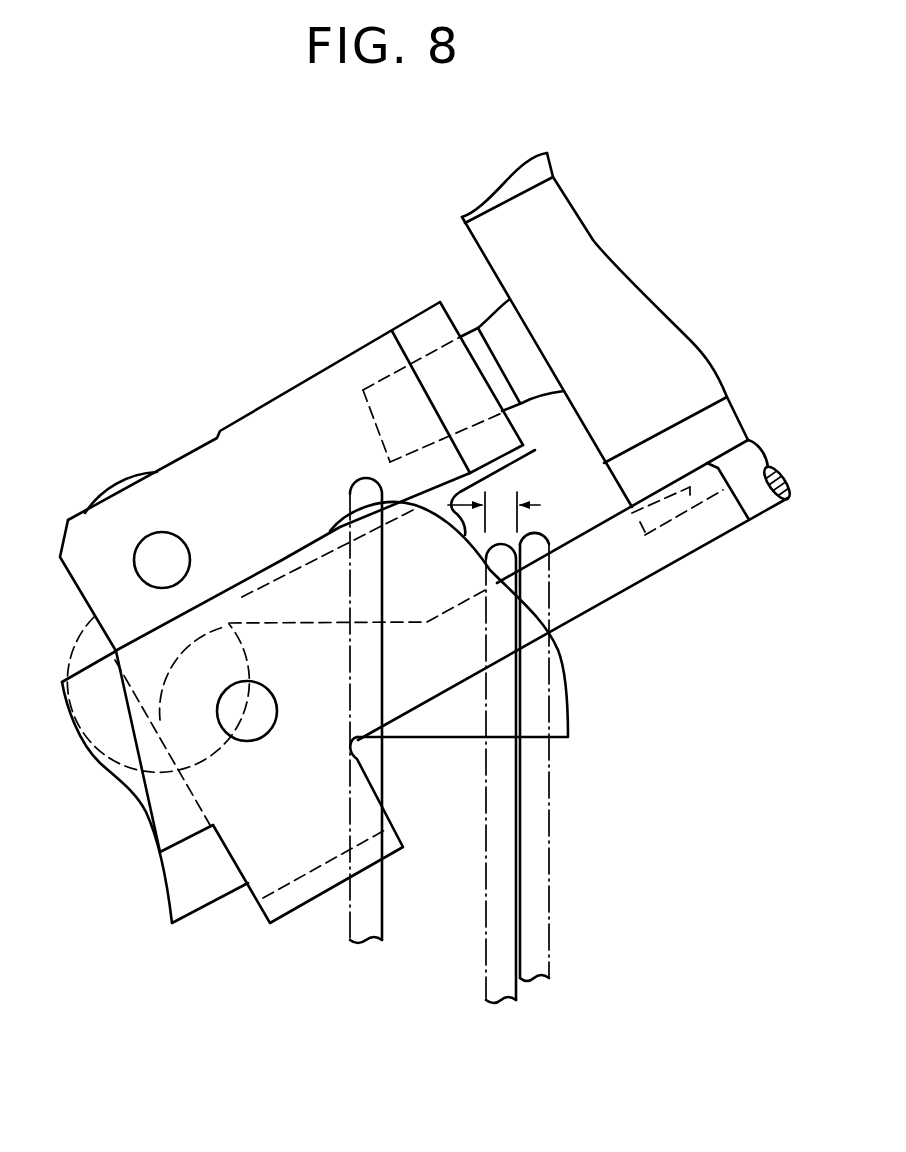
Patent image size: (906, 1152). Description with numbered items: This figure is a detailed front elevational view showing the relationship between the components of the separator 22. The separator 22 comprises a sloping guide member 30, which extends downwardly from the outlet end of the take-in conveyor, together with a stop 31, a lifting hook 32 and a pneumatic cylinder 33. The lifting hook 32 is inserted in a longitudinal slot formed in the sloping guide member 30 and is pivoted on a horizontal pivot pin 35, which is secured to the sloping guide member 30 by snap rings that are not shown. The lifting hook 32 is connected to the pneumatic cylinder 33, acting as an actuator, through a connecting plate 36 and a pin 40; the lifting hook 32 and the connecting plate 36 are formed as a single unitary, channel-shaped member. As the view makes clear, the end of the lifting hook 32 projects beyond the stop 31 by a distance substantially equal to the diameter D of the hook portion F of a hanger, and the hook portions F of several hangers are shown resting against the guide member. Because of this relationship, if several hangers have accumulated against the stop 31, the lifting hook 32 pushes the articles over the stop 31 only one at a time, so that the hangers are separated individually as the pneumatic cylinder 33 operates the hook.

The separator 22 is at (331, 350).
The sloping guide member 30 is at (665, 588).
The stop 31 is at (512, 485).
The lifting hook 32 is at (569, 705).
The pneumatic cylinder 33 is at (478, 247).
The horizontal pivot pin 35 is at (226, 734).
The connecting plate 36 is at (98, 611).
The pin 40 is at (153, 533).
The hook portion of a hanger F is at (385, 891).
The diameter of the hook portion D is at (494, 512).